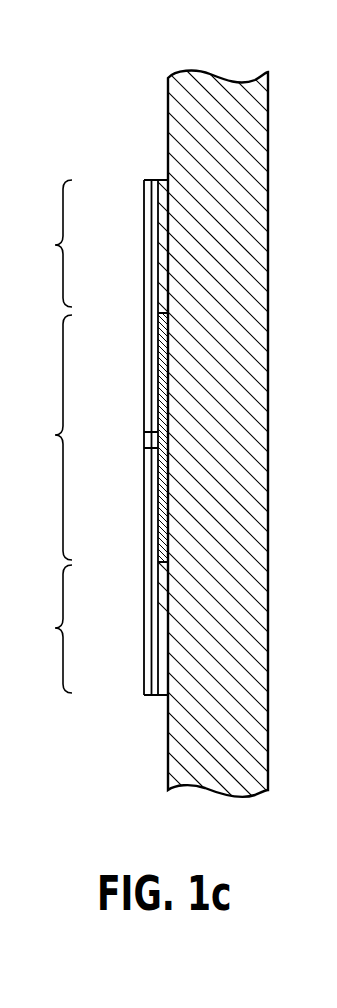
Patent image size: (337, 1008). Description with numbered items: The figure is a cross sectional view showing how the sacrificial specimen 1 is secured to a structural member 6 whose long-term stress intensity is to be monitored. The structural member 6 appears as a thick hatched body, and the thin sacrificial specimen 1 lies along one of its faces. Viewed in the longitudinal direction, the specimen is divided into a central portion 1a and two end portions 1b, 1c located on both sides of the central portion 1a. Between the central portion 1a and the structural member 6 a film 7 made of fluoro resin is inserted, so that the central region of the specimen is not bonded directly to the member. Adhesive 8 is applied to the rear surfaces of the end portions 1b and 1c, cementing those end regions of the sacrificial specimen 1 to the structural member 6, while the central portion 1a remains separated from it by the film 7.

The sacrificial specimen 1 is at (217, 364).
The central portion 1a is at (52, 437).
The end portion 1b is at (52, 243).
The end portion 1c is at (52, 629).
The structural member 6 is at (256, 528).
The film 7 is at (160, 372).
The adhesive 8 is at (163, 250).